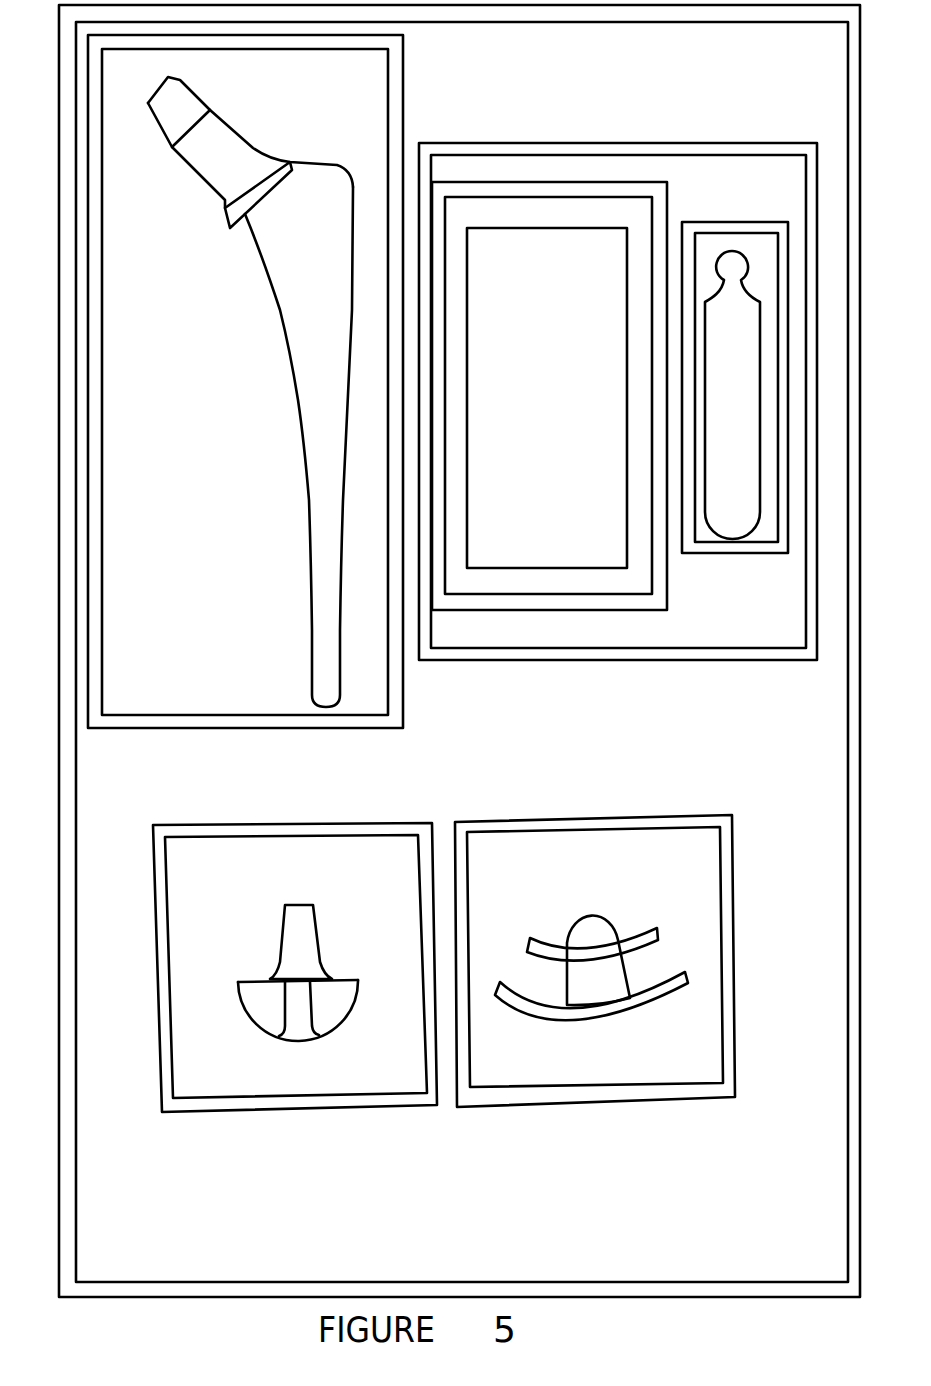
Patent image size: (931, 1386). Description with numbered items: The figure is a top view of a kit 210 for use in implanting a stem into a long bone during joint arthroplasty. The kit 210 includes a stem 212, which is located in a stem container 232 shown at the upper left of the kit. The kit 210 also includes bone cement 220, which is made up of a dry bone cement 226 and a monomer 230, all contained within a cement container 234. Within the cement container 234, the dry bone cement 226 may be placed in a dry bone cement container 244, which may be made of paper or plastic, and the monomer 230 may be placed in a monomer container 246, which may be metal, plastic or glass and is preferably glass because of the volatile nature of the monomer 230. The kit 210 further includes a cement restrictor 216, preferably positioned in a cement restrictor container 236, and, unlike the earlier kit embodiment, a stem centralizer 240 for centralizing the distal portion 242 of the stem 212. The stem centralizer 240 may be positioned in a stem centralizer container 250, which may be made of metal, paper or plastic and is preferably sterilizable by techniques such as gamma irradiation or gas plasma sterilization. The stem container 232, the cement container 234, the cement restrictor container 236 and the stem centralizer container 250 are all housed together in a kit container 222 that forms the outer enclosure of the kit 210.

The kit 210 is at (48, 140).
The stem 212 is at (300, 162).
The cement restrictor 216 is at (610, 915).
The bone cement 220 is at (614, 634).
The kit container 222 is at (633, 22).
The dry bone cement 226 is at (528, 228).
The monomer 230 is at (732, 395).
The stem container 232 is at (135, 712).
The cement container 234 is at (647, 660).
The cement restrictor container 236 is at (555, 1107).
The stem centralizer 240 is at (315, 928).
The distal portion 242 is at (311, 632).
The dry bone cement container 244 is at (591, 174).
The monomer container 246 is at (716, 221).
The stem centralizer container 250 is at (225, 1112).